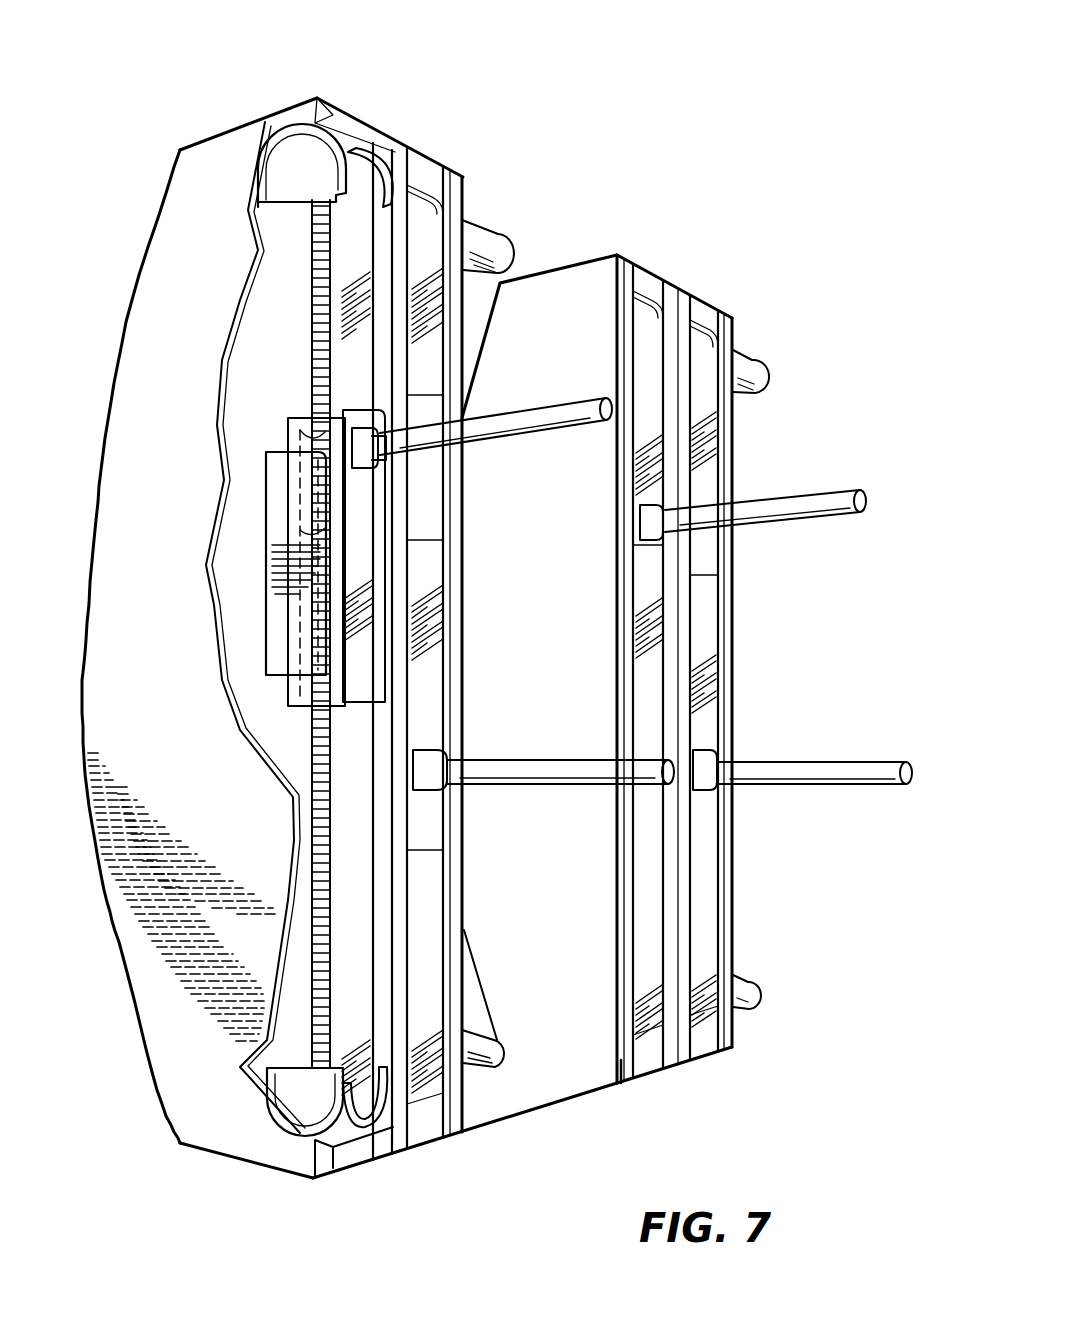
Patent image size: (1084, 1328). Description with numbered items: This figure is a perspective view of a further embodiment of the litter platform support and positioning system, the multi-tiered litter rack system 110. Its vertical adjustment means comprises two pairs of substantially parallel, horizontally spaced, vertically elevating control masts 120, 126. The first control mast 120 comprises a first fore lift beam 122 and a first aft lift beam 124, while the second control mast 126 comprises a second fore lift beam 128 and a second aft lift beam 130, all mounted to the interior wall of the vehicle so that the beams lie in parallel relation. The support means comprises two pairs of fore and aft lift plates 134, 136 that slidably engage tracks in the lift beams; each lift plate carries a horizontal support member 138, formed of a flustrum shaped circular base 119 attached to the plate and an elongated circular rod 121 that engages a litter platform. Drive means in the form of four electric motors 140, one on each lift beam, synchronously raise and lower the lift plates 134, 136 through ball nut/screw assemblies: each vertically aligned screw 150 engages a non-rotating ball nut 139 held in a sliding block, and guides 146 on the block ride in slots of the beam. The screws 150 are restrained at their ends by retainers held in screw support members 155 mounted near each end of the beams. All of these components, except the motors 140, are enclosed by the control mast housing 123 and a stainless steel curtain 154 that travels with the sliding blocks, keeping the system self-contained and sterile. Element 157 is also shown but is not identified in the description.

The multi-tiered litter rack system 110 is at (160, 200).
The flustrum shaped circular base 119 is at (385, 460).
The first control mast 120 is at (290, 108).
The elongated circular rod 121 is at (578, 430).
The first fore lift beam 122 is at (722, 1058).
The control mast housing 123 is at (145, 310).
The first aft lift beam 124 is at (428, 1152).
The second control mast 126 is at (430, 148).
The second fore lift beam 128 is at (625, 1085).
The second aft lift beam 130 is at (312, 1180).
The first pair of fore and aft lift plates 134 is at (440, 675).
The second pair of fore and aft lift plates 136 is at (372, 590).
The horizontal support member 138 is at (563, 408).
The non-rotating ball nut 139 is at (288, 425).
The electric motor 140 is at (487, 227).
The guide 146 is at (285, 543).
The screw 150 is at (312, 318).
The stainless steel curtain 154 is at (703, 417).
The screw support member 155 is at (290, 157).
The hook bracket 157 is at (357, 178).